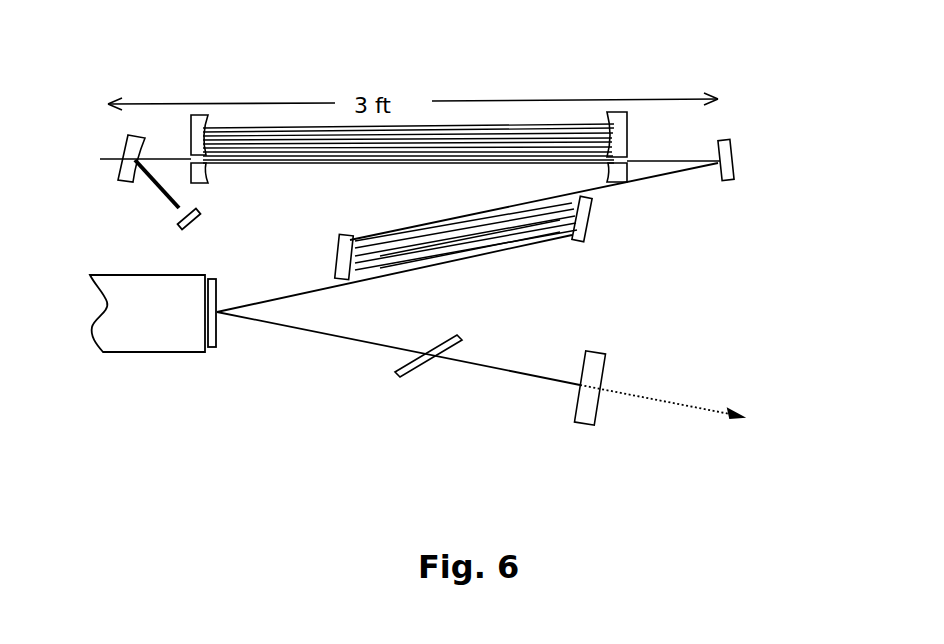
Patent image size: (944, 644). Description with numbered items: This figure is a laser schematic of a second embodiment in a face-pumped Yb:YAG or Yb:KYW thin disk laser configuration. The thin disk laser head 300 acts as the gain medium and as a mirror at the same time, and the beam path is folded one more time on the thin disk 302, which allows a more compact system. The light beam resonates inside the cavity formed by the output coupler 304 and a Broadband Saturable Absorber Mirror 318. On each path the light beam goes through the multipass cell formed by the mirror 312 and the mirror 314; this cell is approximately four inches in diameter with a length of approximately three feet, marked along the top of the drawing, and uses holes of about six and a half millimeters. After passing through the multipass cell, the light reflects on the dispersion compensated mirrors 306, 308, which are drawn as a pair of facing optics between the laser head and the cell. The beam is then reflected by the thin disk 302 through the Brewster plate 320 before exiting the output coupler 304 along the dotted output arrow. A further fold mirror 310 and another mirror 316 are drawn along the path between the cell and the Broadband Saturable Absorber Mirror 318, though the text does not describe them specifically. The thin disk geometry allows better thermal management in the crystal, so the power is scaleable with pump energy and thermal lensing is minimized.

The thin disk laser head 300 is at (143, 330).
The thin disk 302 is at (212, 338).
The output coupler 304 is at (587, 420).
The dispersion compensated mirror 306 is at (337, 254).
The dispersion compensated mirror 308 is at (593, 223).
The mirror 310 is at (733, 158).
The mirror 312 is at (618, 122).
The mirror 314 is at (197, 124).
The mirror 316 is at (104, 159).
The Broadband Saturable Absorber Mirror 318 is at (182, 227).
The Brewster plate 320 is at (413, 372).